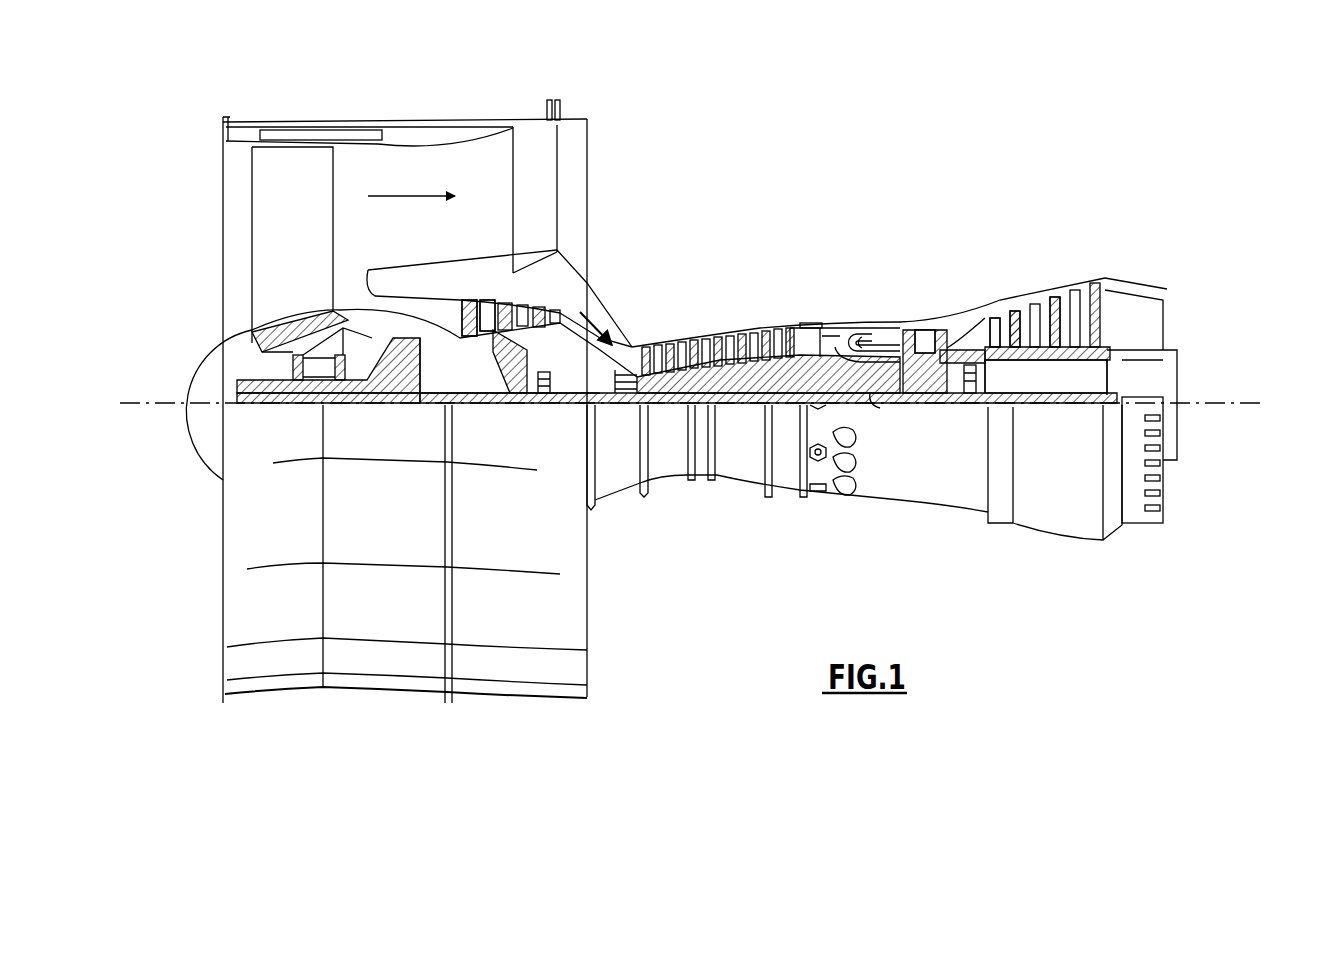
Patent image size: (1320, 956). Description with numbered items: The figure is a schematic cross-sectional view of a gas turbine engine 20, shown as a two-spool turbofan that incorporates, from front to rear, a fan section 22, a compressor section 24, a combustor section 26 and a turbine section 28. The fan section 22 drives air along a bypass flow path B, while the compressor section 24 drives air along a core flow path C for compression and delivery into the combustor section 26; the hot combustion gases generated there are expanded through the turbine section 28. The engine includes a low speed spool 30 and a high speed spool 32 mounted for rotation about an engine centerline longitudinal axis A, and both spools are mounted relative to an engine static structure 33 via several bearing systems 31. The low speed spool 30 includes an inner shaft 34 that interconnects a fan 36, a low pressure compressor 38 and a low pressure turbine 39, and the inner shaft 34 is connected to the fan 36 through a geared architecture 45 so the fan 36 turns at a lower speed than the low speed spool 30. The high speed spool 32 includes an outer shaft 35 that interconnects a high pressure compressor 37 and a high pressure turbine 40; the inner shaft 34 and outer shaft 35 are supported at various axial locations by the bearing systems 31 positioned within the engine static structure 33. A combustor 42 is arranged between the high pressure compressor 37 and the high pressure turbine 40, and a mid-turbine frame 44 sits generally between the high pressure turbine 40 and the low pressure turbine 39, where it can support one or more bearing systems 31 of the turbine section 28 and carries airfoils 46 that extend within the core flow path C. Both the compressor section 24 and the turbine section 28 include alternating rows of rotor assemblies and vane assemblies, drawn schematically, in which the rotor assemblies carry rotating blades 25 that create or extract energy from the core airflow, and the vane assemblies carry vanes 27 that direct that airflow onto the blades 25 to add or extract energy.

The gas turbine engine 20 is at (868, 170).
The fan section 22 is at (333, 112).
The compressor section 24 is at (637, 308).
The blades 25 is at (472, 312).
The combustor section 26 is at (860, 300).
The vanes 27 is at (488, 303).
The turbine section 28 is at (1006, 258).
The low speed spool 30 is at (743, 412).
The bearing systems 31 is at (328, 380).
The high speed spool 32 is at (787, 340).
The engine static structure 33 is at (783, 500).
The inner shaft 34 is at (603, 407).
The outer shaft 35 is at (868, 400).
The fan 36 is at (307, 253).
The high pressure compressor 37 is at (717, 372).
The low pressure compressor 38 is at (557, 263).
The low pressure turbine 39 is at (1047, 300).
The high pressure turbine 40 is at (922, 327).
The combustor 42 is at (860, 347).
The mid-turbine frame 44 is at (970, 308).
The geared architecture 45 is at (410, 380).
The airfoils 46 is at (990, 360).
The engine centerline longitudinal axis A is at (1257, 403).
The bypass flow path B is at (403, 197).
The core flow path C is at (600, 313).